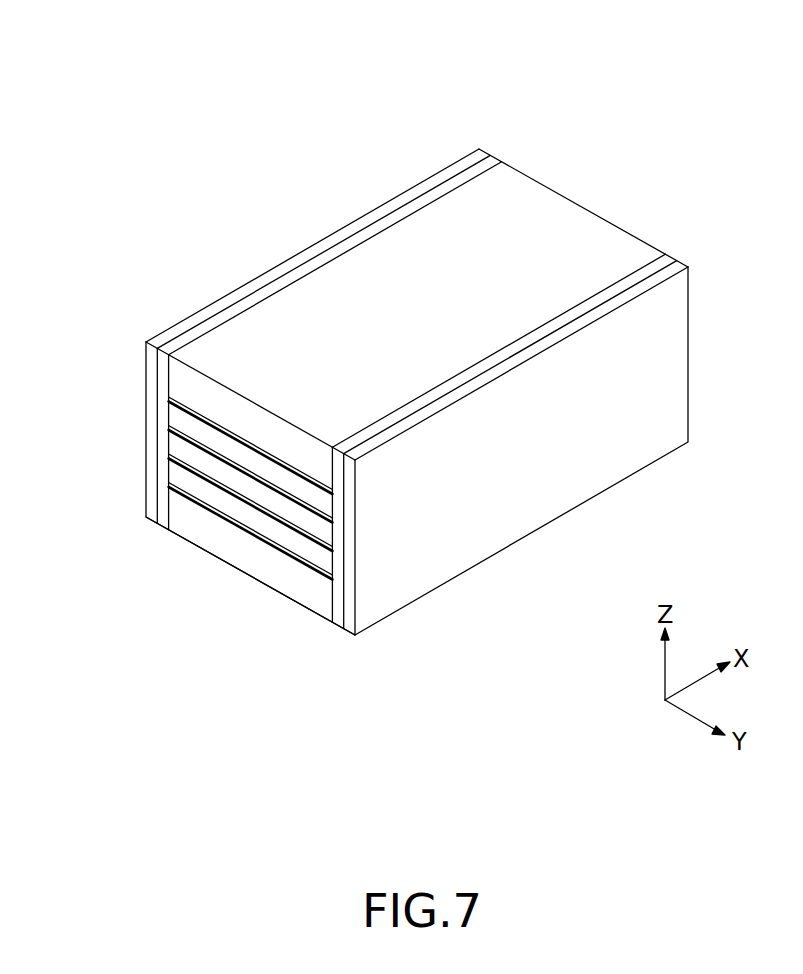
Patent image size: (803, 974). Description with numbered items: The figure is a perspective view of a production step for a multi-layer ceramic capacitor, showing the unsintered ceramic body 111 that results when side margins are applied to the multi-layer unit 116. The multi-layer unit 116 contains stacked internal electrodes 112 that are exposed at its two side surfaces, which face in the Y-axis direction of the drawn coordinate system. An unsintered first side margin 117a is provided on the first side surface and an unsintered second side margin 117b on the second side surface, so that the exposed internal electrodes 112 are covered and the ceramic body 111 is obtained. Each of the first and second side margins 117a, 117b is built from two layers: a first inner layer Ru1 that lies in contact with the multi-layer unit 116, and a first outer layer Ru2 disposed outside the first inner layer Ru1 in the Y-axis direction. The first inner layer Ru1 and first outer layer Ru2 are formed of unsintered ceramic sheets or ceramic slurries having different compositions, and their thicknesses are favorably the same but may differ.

The unsintered ceramic body 111 is at (565, 138).
The first internal electrodes 112 is at (173, 399).
The multi-layer unit 116 is at (224, 574).
The first side margin 117a is at (313, 172).
The second side margin 117b is at (423, 745).
The first inner layer Ru1 is at (308, 273).
The first outer layer Ru2 is at (247, 294).